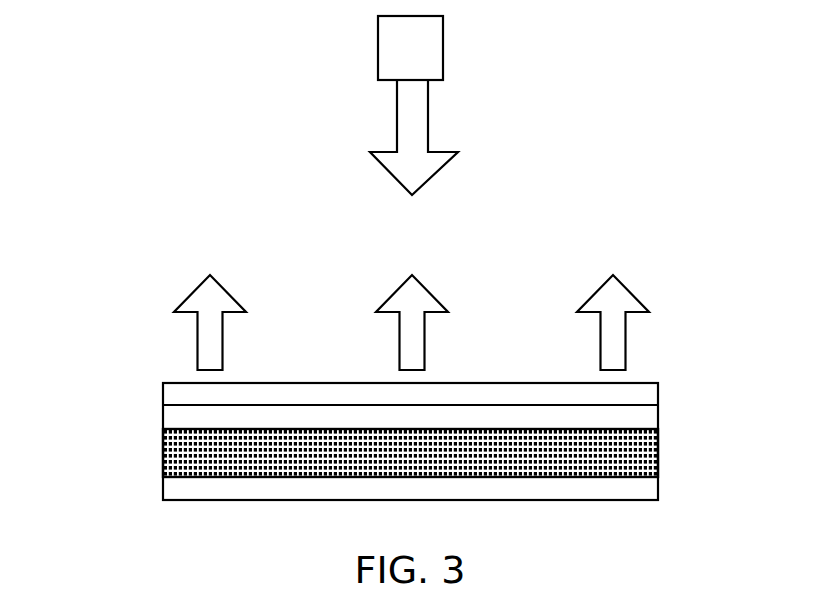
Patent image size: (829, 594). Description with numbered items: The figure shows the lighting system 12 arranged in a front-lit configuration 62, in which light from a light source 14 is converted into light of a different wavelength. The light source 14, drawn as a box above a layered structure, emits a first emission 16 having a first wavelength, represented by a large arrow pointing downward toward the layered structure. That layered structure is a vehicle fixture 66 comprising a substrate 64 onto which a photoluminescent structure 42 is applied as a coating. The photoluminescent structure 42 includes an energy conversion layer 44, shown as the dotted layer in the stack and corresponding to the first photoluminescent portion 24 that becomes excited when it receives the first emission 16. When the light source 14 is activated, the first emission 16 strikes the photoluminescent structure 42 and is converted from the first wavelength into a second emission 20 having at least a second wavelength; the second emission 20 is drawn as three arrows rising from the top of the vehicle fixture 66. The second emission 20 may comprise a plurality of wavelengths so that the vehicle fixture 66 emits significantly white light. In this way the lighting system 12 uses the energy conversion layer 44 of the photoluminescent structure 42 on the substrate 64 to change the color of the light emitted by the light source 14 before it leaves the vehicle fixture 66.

The lighting system 12 is at (190, 72).
The light source 14 is at (410, 48).
The first emission 16 is at (406, 115).
The second emission 20 is at (217, 340).
The first photoluminescent portion 24 is at (647, 453).
The photoluminescent structure 42 is at (670, 415).
The energy conversion layer 44 is at (410, 453).
The front-lit configuration 62 is at (583, 168).
The substrate 64 is at (235, 493).
The vehicle fixture 66 is at (158, 495).